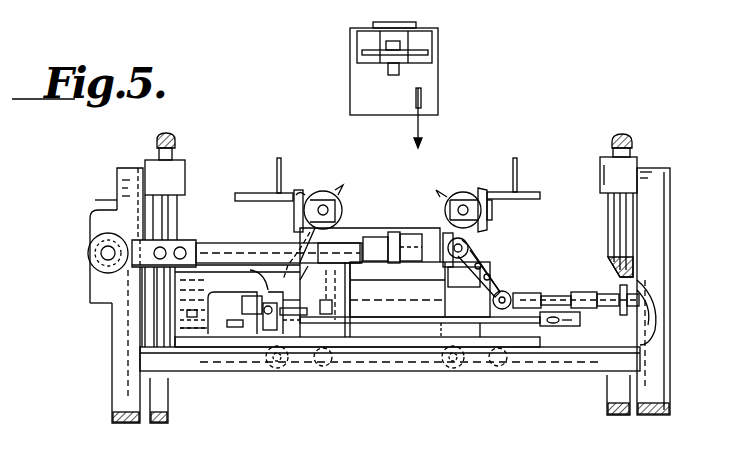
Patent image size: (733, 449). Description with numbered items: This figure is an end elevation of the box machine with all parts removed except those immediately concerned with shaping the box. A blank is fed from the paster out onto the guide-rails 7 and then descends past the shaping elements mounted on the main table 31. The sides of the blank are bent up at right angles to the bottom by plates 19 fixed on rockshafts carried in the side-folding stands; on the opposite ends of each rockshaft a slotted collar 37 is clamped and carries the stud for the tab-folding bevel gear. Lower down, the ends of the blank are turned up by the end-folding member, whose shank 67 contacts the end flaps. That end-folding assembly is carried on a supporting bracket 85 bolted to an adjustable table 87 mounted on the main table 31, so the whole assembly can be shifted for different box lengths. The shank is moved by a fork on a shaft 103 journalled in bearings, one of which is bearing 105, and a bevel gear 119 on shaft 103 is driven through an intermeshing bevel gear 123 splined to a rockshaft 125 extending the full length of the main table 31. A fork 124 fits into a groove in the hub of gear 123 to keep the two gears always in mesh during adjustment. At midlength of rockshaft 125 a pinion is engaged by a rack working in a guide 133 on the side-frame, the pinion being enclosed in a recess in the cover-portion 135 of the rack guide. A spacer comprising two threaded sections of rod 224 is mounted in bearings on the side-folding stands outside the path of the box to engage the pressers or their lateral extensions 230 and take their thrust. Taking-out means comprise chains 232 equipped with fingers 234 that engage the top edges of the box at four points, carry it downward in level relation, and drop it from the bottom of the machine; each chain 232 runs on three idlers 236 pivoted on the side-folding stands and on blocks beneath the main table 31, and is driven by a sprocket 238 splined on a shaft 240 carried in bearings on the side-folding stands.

The guide-rails 7 is at (283, 190).
The plates 19 is at (294, 214).
The main table 31 is at (415, 347).
The collar 37 is at (350, 243).
The shank 67 is at (402, 233).
The supporting bracket 85 is at (225, 294).
The adjustable table 87 is at (210, 334).
The shaft 103 is at (214, 244).
The bearing 105 is at (378, 238).
The bevel gear 119 is at (118, 236).
The bevel gear 123 is at (90, 254).
The fork 124 is at (102, 246).
The rockshaft 125 is at (101, 265).
The guide 133 is at (160, 168).
The cover-portion 135 is at (90, 290).
The rod 224 is at (446, 300).
The lateral extensions 230 is at (330, 320).
The chains 232 is at (268, 286).
The fingers 234 is at (283, 282).
The idlers 236 is at (473, 347).
The sprocket 238 is at (287, 334).
The shaft 240 is at (518, 296).